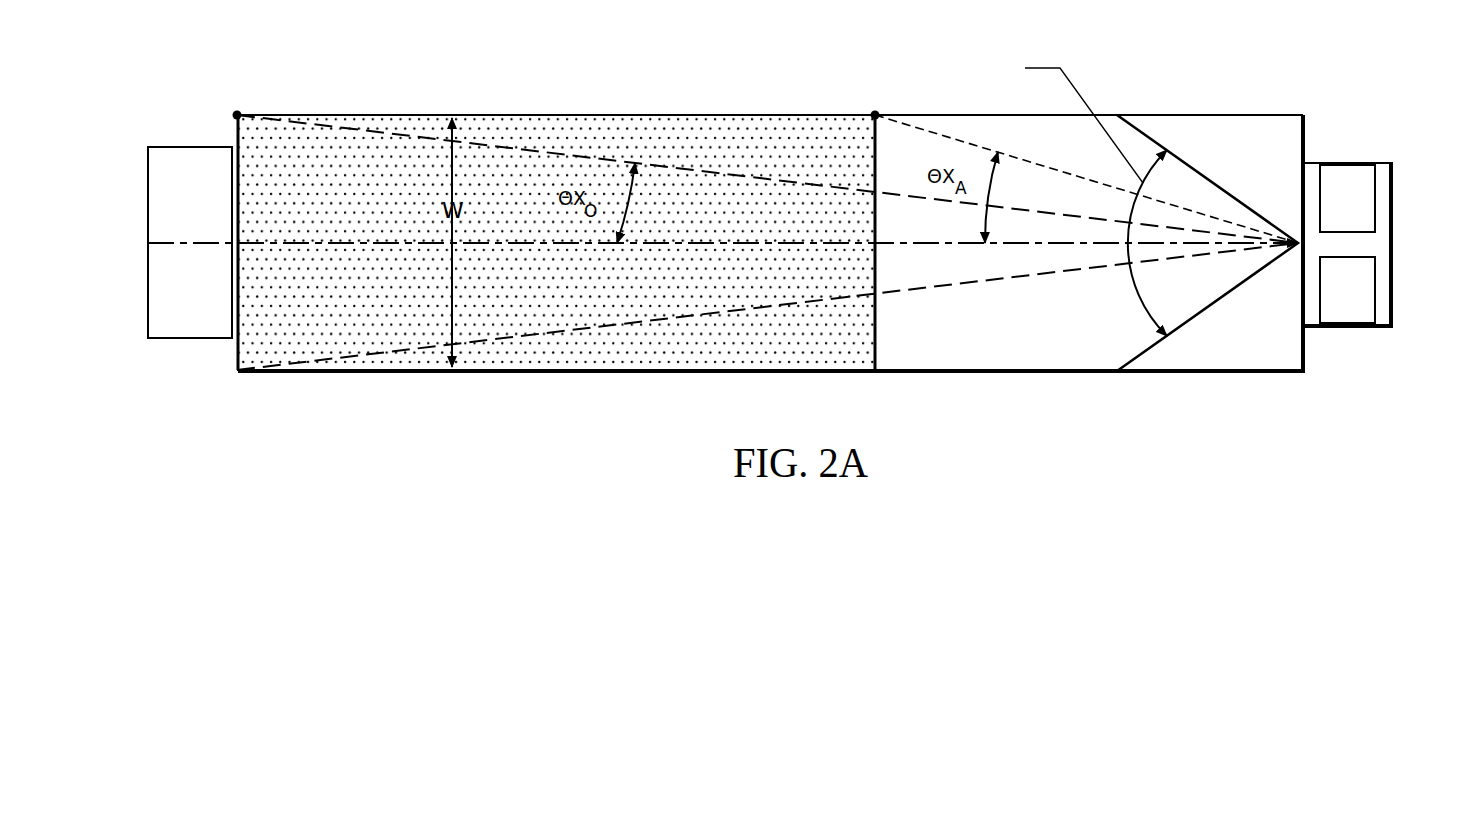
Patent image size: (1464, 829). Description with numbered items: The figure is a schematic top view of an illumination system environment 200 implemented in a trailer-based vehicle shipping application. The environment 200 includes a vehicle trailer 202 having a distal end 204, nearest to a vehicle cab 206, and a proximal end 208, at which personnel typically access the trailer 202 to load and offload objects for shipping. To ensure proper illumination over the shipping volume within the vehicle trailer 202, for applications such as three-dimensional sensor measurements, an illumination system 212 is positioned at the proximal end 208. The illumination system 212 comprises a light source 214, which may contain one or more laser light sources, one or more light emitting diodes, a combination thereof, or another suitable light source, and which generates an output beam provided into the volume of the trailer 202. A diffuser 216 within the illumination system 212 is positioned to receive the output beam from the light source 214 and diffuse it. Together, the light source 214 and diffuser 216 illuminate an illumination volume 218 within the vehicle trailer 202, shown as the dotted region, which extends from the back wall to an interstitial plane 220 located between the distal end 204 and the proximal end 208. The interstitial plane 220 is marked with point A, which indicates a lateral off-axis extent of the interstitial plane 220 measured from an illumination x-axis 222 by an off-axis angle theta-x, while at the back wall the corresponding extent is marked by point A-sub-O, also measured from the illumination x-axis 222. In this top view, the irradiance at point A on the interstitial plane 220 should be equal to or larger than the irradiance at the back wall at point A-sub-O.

The illumination system environment 200 is at (207, 55).
The vehicle trailer 202 is at (597, 112).
The distal end 204 is at (236, 133).
The vehicle cab 206 is at (148, 213).
The proximal end 208 is at (1306, 137).
The illumination system 212 is at (1380, 245).
The light source 214 is at (1365, 304).
The diffuser 216 is at (1365, 211).
The illumination volume 218 is at (603, 305).
The interstitial plane 220 is at (878, 328).
The illumination x-axis 222 is at (189, 248).